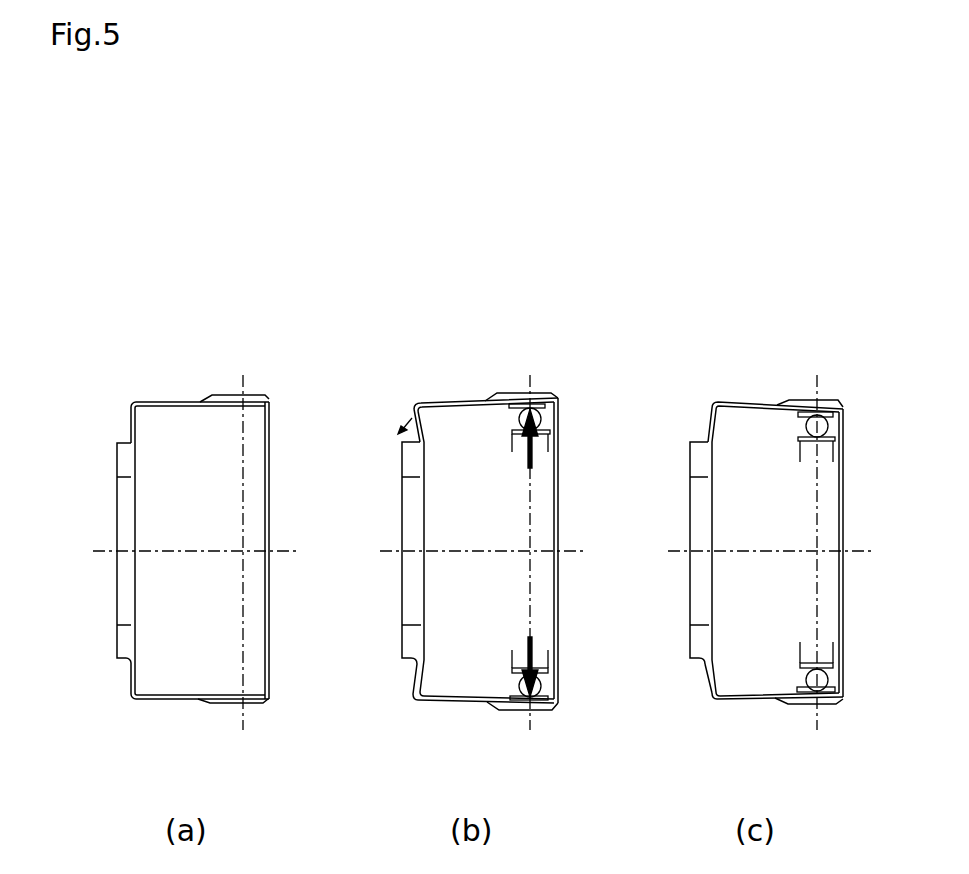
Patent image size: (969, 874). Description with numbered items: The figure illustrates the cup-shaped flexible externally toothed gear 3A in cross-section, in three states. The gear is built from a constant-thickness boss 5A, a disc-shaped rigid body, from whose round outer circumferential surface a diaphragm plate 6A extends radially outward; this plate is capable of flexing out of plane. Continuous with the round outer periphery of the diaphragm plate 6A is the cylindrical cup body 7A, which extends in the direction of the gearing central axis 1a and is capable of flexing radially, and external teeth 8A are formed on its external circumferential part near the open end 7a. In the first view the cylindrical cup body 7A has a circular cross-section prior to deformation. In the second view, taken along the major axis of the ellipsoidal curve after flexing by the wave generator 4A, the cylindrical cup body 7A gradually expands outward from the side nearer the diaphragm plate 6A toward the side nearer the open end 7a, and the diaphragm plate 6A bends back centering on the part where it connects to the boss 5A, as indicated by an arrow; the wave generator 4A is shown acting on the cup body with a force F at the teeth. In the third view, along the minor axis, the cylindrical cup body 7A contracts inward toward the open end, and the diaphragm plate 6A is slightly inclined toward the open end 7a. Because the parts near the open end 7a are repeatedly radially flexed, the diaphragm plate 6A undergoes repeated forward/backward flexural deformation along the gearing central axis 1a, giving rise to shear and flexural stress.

The cup-shaped flexible externally toothed gear 3A is at (213, 321).
The cylindrical cup body 7A is at (167, 407).
The diaphragm plate 6A is at (130, 427).
The boss 5A is at (126, 460).
The open end 7a is at (270, 402).
The external teeth 8A is at (256, 397).
The gearing central axis 1a is at (103, 553).
The wave generator 4A is at (539, 458).
The pressing force F is at (530, 455).